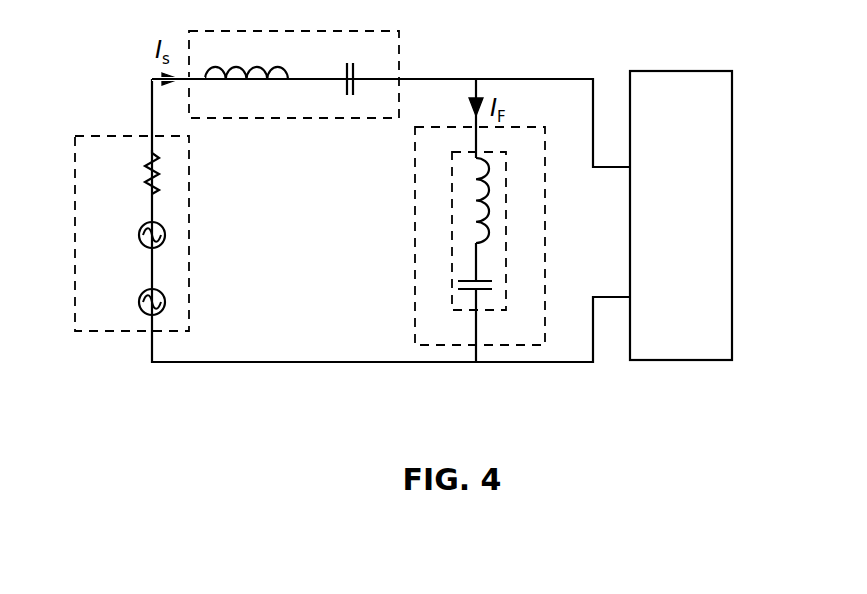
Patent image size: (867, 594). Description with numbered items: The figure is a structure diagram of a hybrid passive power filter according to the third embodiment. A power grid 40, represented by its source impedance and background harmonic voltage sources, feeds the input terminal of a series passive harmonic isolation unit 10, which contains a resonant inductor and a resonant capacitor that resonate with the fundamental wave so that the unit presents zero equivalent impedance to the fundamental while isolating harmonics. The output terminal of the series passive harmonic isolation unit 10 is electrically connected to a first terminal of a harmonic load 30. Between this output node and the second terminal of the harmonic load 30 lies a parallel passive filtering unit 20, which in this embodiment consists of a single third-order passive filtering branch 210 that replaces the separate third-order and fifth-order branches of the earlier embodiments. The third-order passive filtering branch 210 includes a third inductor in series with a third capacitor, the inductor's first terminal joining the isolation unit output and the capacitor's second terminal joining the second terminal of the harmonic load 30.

The series passive harmonic isolation unit 10 is at (400, 31).
The parallel passive filtering unit 20 is at (452, 268).
The third-order passive filtering branch 210 is at (452, 176).
The harmonic load 30 is at (733, 146).
The power grid 40 is at (190, 237).